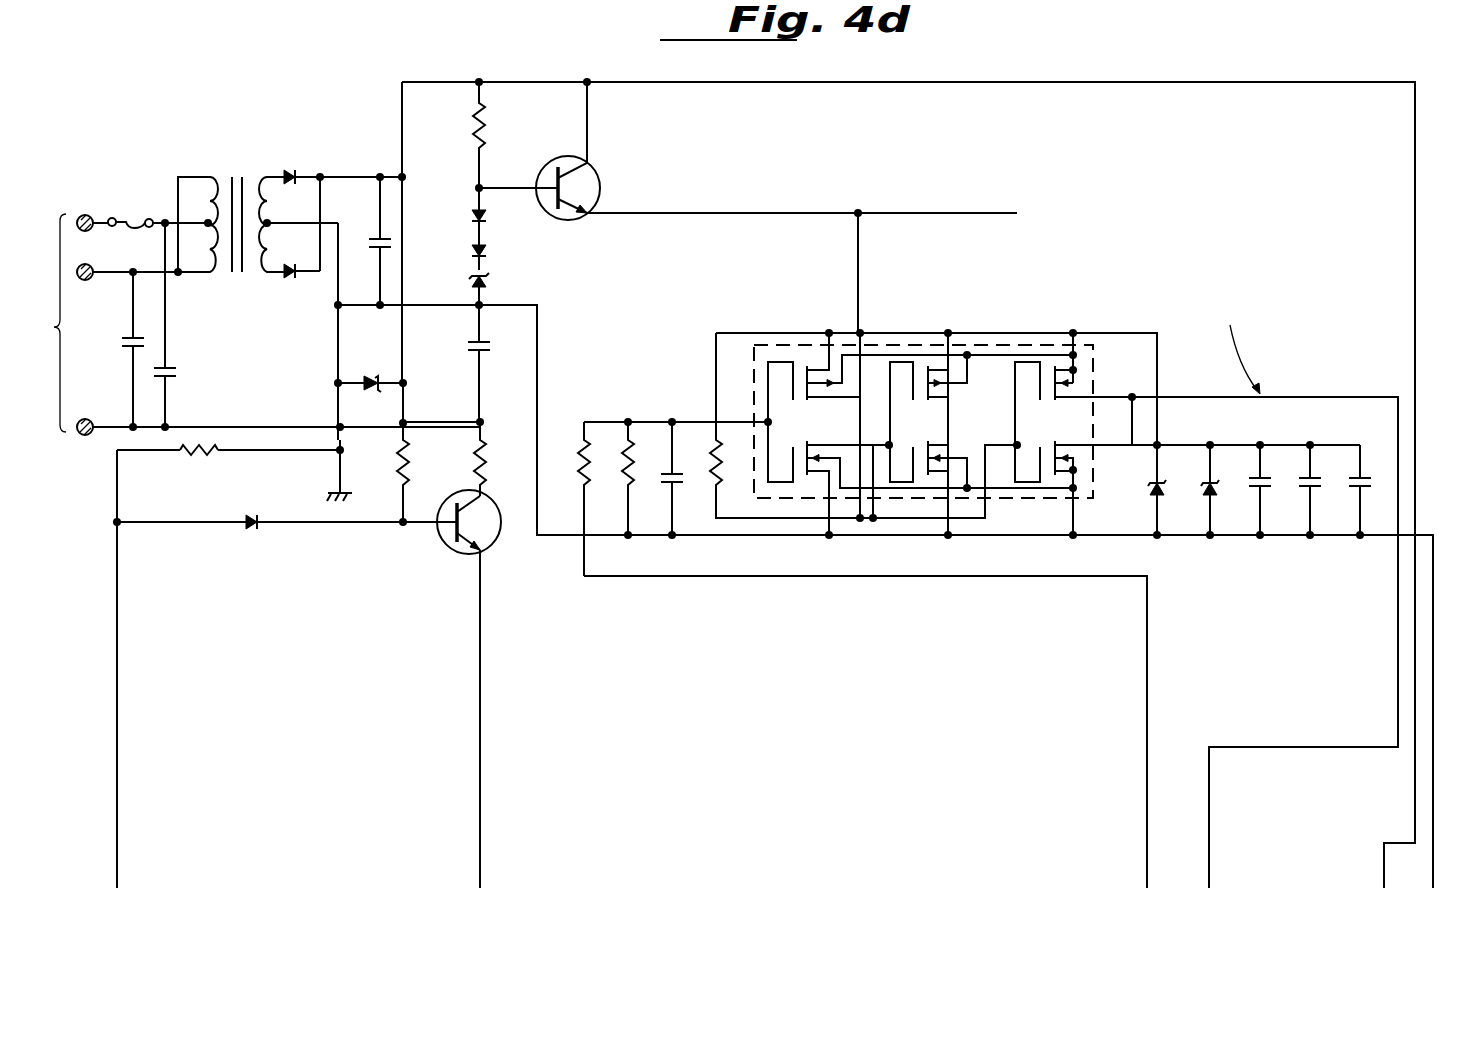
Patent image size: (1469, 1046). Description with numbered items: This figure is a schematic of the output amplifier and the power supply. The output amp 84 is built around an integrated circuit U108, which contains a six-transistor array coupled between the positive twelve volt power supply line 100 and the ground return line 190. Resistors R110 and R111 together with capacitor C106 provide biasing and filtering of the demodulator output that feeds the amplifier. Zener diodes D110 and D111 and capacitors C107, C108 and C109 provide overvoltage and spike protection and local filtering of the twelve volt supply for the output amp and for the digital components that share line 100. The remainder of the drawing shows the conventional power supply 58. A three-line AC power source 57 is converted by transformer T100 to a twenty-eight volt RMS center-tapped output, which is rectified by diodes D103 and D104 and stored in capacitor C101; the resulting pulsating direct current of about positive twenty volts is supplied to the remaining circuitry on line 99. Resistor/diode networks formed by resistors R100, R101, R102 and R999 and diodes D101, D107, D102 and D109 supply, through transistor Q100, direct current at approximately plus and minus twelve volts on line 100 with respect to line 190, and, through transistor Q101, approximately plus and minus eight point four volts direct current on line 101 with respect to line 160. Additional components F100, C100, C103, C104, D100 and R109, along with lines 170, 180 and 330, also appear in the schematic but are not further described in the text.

The three-line AC power source 57 is at (257, 336).
The power supply 58 is at (391, 81).
The output amp 84 is at (1089, 310).
The line 99 is at (952, 80).
The +12 volt power supply line 100 is at (707, 213).
The line 101 is at (482, 638).
The line 160 is at (118, 765).
The line to Q101 base 170 is at (190, 523).
The line through R102 180 is at (275, 451).
The ground return line 190 is at (336, 410).
The line T 330 is at (850, 578).
The fuse F100 is at (134, 214).
The transformer T100 is at (262, 151).
The diode D103 is at (288, 173).
The diode D104 is at (288, 280).
The capacitor C101 is at (378, 237).
The capacitor C103 is at (122, 344).
The capacitor C104 is at (180, 373).
The diode D100 is at (371, 376).
The resistor R101 is at (488, 132).
The transistor Q100 is at (583, 180).
The diode D107 is at (472, 215).
The diode D102 is at (490, 252).
The diode D109 is at (490, 280).
The capacitor C100 is at (468, 346).
The resistor R102 is at (212, 453).
The diode D101 is at (253, 527).
The resistor R100 is at (409, 462).
The resistor R999 is at (488, 463).
The transistor Q101 is at (445, 543).
The resistor R110 is at (580, 462).
The resistor R111 is at (633, 476).
The capacitor C106 is at (663, 485).
The resistor R109 is at (712, 474).
The integrated circuit U108 is at (797, 342).
The zener diode D110 is at (1152, 490).
The zener diode D111 is at (1205, 490).
The capacitor C107 is at (1252, 488).
The capacitor C108 is at (1302, 488).
The capacitor C109 is at (1352, 488).